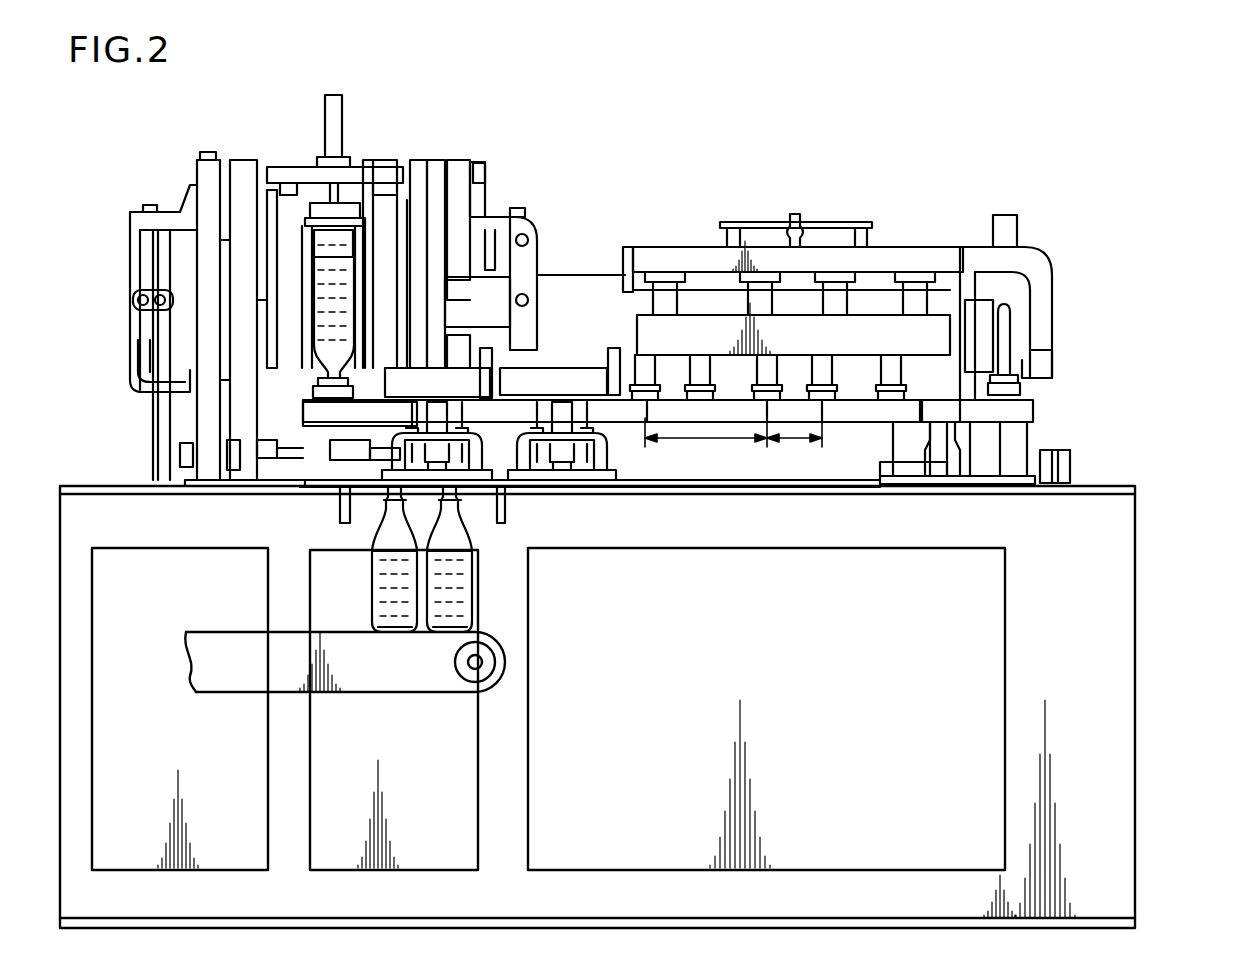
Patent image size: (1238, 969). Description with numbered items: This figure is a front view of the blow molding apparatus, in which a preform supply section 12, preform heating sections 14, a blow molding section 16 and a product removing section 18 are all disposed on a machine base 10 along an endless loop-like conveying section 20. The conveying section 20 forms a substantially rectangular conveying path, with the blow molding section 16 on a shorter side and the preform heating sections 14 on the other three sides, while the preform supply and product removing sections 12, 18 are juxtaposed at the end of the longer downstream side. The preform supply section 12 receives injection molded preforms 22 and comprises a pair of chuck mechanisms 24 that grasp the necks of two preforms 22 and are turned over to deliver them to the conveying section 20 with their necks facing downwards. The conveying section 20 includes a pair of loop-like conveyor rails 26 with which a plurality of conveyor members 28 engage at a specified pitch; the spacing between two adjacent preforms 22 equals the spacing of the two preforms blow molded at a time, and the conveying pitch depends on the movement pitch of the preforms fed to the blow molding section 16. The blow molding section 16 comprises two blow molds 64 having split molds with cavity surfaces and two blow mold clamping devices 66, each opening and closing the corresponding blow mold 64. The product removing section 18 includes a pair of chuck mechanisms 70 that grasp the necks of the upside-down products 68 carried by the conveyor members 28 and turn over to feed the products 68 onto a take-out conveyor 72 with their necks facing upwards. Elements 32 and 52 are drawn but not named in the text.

The machine base 10 is at (1112, 480).
The preform supply section 12 is at (721, 449).
The preform heating sections 14 is at (910, 192).
The blow molding section 16 is at (105, 216).
The product removing section 18 is at (375, 502).
The conveying section 20 is at (1045, 405).
The preforms 22 is at (1010, 320).
The chuck mechanisms 24 is at (568, 368).
The conveyor rails 26 is at (1022, 405).
The conveyor members 28 is at (942, 392).
The stretch rod 32 is at (1022, 365).
The cylinder block 52 is at (920, 238).
The blow molds 64 is at (292, 222).
The blow mold clamping devices 66 is at (200, 375).
The products 68 is at (462, 582).
The chuck mechanisms 70 is at (418, 380).
The take-out conveyor 72 is at (400, 686).